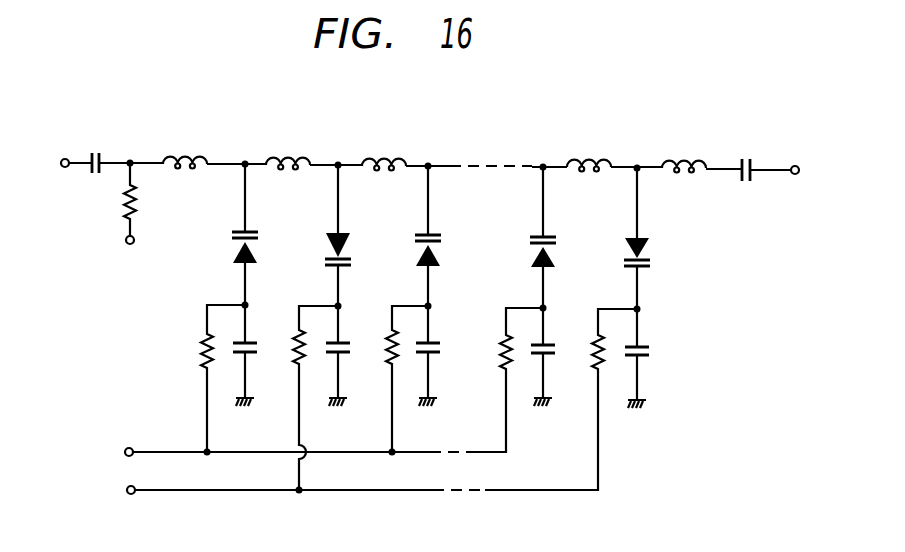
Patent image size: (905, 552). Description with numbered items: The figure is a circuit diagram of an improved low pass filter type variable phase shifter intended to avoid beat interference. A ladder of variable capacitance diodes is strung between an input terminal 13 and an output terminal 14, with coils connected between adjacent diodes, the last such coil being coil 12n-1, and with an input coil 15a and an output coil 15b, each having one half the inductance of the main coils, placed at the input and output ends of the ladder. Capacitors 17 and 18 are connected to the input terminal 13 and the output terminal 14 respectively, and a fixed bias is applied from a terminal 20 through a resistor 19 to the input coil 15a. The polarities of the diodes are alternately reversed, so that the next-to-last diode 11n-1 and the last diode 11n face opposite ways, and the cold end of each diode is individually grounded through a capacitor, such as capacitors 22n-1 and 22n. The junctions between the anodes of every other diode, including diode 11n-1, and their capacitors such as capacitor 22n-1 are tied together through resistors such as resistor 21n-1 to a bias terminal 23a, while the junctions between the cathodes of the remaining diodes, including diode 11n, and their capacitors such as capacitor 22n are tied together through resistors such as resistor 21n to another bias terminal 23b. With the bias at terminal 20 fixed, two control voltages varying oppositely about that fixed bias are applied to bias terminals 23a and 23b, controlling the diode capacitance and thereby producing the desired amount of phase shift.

The input terminal 13 is at (64, 158).
The output terminal 14 is at (794, 176).
The capacitor 17 is at (101, 153).
The capacitor 18 is at (752, 161).
The resistor 19 is at (123, 207).
The terminal 20 is at (130, 245).
The input coil 15a is at (190, 174).
The output coil 15b is at (686, 162).
The coil 12n-1 is at (587, 162).
The variable capacitance element 11n-1 is at (534, 250).
The variable capacitance element 11n is at (628, 250).
The resistor 21n-1 is at (501, 352).
The resistor 21n is at (596, 352).
The capacitor 22n-1 is at (543, 357).
The capacitor 22n is at (641, 360).
The bias terminal 23a is at (126, 449).
The bias terminal 23b is at (130, 493).